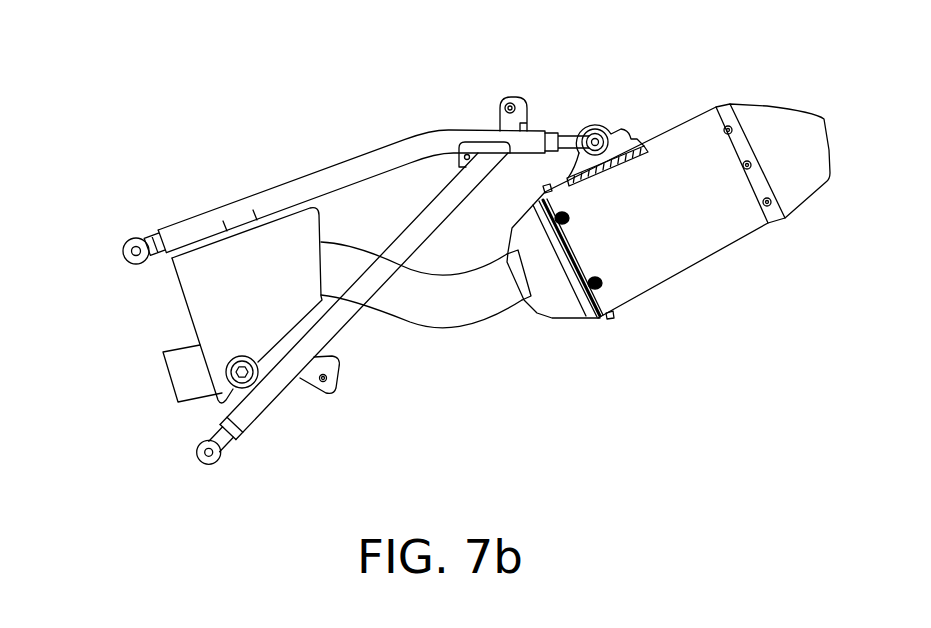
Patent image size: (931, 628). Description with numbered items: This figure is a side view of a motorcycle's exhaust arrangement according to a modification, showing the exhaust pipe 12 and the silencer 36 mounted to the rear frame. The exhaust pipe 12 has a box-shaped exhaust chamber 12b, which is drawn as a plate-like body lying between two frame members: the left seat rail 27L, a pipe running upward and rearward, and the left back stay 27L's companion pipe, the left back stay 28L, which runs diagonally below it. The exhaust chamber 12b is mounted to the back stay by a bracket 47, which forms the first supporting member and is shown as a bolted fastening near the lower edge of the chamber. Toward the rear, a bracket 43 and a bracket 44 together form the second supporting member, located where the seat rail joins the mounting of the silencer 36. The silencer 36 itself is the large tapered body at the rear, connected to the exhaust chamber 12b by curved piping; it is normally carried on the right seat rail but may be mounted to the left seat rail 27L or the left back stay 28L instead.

The exhaust pipe 12 is at (148, 337).
The exhaust chamber 12b is at (184, 294).
The left seat rail 27L is at (183, 223).
The left back stay 28L is at (340, 332).
The silencer 36 is at (682, 276).
The bracket 43 is at (563, 130).
The bracket 44 is at (622, 133).
The bracket 47 is at (262, 370).